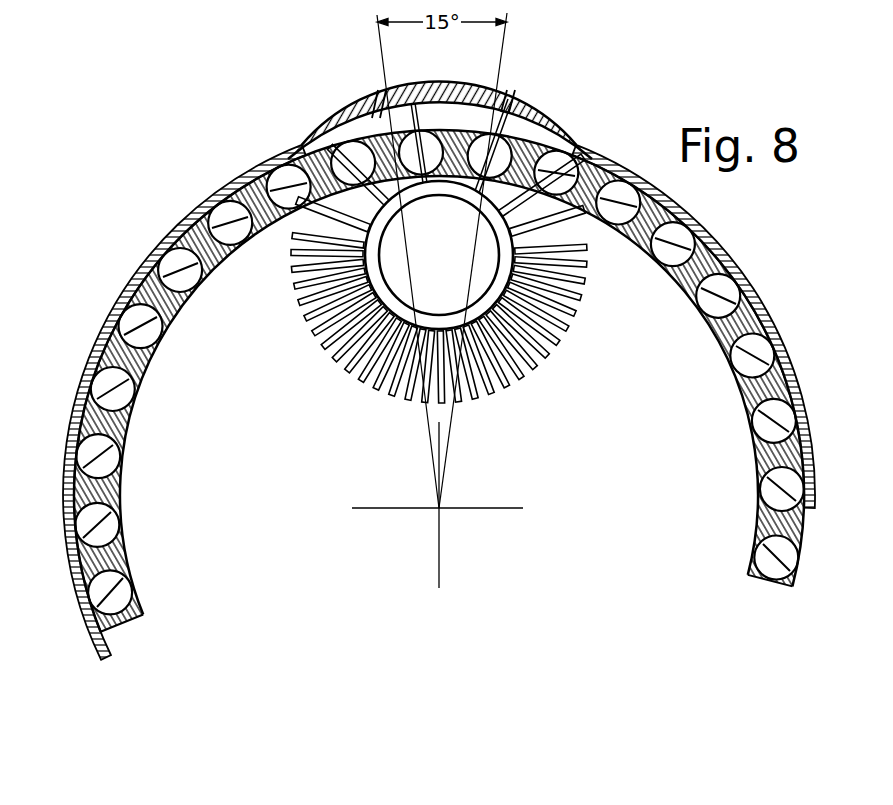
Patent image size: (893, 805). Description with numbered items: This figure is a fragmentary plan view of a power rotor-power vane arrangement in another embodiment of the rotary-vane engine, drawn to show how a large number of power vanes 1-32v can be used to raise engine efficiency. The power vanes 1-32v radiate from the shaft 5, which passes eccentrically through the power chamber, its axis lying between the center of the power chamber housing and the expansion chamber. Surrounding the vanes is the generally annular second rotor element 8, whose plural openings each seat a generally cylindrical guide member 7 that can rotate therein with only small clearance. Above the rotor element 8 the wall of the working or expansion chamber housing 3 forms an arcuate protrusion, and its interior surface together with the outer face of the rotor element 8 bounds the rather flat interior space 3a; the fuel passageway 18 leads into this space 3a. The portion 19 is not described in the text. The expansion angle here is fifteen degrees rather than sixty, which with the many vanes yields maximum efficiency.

The cap left portion 19 is at (368, 100).
The working or expansion chamber housing 3 is at (415, 84).
The interior space of expansion chamber 3a is at (441, 113).
The fuel passageway 18 is at (527, 101).
The shaft 5 is at (417, 267).
The guide member 7 is at (703, 307).
The second rotor element 8 is at (762, 453).
The power vanes 1-32v is at (496, 390).